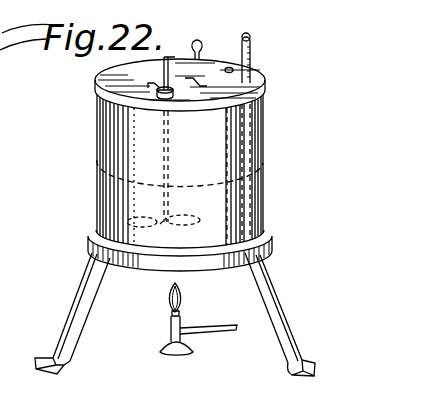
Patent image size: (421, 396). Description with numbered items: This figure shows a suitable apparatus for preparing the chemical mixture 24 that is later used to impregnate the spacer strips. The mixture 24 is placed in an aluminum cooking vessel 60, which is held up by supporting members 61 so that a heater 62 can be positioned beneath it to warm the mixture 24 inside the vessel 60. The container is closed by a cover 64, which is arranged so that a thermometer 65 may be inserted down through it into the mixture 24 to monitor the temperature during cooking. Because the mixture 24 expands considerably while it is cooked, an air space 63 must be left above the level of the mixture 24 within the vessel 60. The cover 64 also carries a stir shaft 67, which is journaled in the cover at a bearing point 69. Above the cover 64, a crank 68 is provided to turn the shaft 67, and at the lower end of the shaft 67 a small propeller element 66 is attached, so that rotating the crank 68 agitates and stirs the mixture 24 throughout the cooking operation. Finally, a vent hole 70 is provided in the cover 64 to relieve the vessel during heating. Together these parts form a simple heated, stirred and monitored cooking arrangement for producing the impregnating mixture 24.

The mixture 24 is at (112, 203).
The cooking vessel 60 is at (252, 225).
The supporting members 61 is at (90, 272).
The heater 62 is at (168, 318).
The air space 63 is at (228, 141).
The cover 64 is at (116, 79).
The thermometer 65 is at (252, 65).
The propeller element 66 is at (142, 231).
The stir shaft 67 is at (167, 57).
The crank 68 is at (201, 44).
The journal 69 is at (153, 95).
The vent hole 70 is at (251, 52).